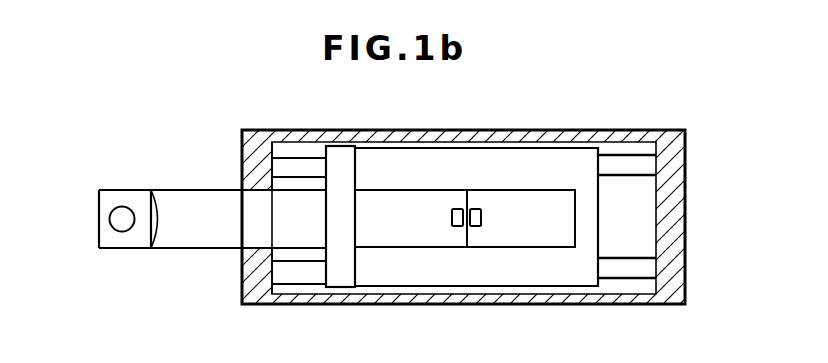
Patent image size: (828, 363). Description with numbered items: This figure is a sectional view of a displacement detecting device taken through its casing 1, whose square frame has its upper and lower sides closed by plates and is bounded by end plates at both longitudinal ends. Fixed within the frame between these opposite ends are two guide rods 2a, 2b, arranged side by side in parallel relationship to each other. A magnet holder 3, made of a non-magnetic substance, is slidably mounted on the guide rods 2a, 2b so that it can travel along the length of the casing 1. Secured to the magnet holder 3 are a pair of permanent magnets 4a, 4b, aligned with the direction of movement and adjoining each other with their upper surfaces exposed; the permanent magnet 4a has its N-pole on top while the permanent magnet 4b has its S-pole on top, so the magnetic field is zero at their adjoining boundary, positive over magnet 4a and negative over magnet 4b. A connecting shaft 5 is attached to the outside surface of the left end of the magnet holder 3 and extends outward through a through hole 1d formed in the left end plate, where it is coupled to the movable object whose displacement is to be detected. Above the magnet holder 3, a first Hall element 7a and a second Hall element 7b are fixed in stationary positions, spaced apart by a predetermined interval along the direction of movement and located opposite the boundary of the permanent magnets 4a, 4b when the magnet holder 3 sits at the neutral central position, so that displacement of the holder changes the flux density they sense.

The casing 1 is at (675, 200).
The through hole 1d is at (247, 203).
The guide rod 2a is at (632, 268).
The guide rod 2b is at (628, 156).
The magnet holder 3 is at (345, 272).
The permanent magnet 4a is at (402, 207).
The permanent magnet 4b is at (543, 207).
The connecting shaft 5 is at (207, 236).
The first Hall element 7a is at (480, 208).
The second Hall element 7b is at (457, 208).